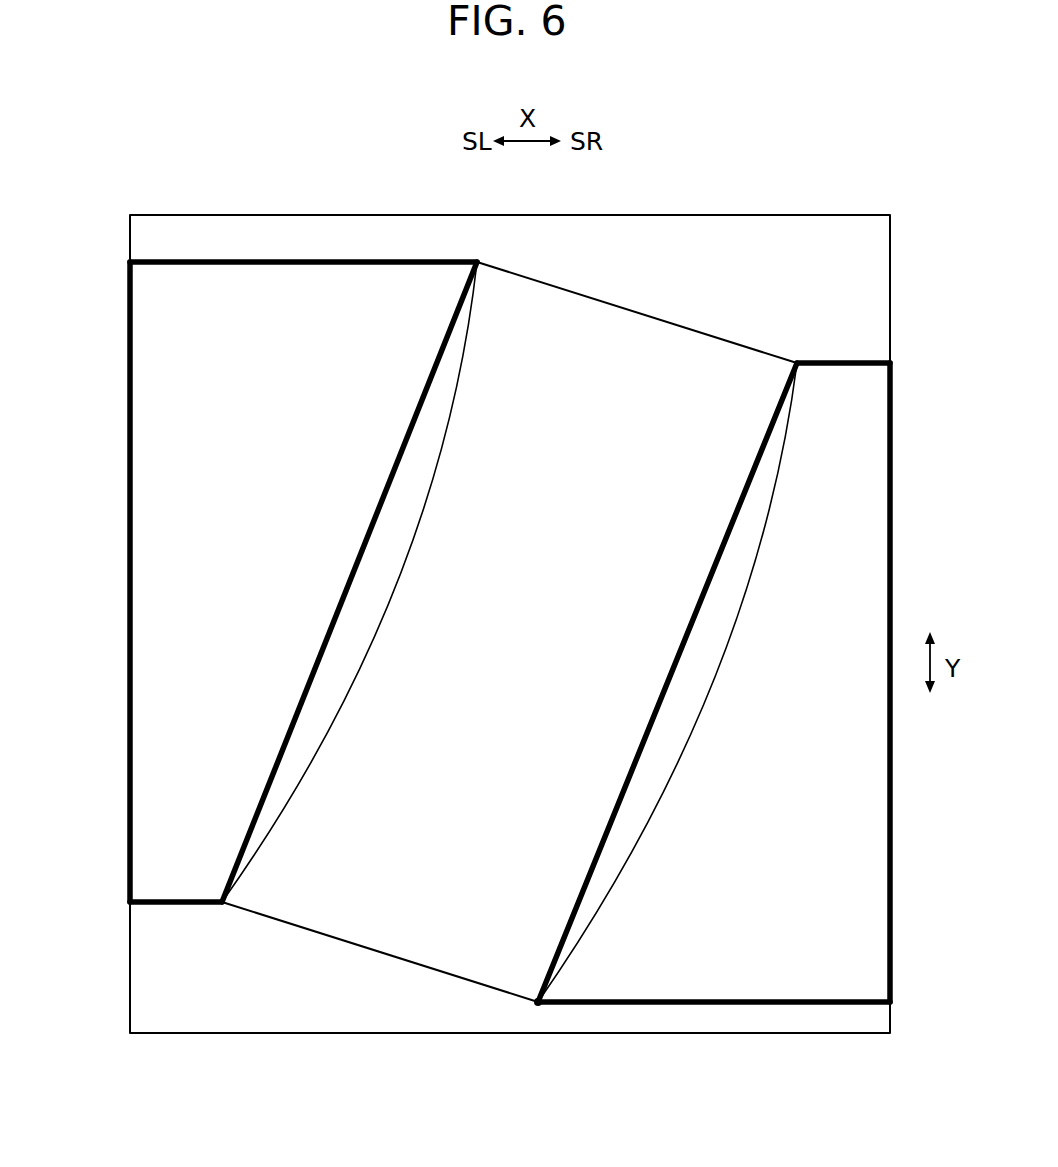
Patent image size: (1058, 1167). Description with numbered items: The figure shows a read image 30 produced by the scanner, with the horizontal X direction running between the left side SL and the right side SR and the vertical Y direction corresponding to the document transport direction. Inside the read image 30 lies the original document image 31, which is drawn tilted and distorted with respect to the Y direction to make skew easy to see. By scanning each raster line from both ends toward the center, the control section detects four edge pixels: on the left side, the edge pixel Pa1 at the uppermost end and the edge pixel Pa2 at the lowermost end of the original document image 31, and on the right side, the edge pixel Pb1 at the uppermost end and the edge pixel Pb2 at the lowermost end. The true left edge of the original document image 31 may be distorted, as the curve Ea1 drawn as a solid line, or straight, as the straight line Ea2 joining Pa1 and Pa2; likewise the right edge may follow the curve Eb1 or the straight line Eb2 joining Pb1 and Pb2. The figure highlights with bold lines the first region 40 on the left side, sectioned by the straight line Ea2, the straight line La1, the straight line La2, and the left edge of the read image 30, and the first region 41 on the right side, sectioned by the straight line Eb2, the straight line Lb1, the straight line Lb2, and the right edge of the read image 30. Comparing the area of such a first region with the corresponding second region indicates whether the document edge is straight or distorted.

The read image 30 is at (833, 216).
The original document image 31 is at (688, 330).
The first region on the side SL 40 is at (299, 577).
The first region on the side SR 41 is at (738, 700).
The straight line La1 is at (311, 264).
The straight line La2 is at (165, 904).
The straight line Lb1 is at (843, 362).
The straight line Lb2 is at (737, 1007).
The edge pixel Pa1 is at (478, 261).
The edge pixel Pa2 is at (221, 905).
The edge pixel Pb1 is at (797, 361).
The edge pixel Pb2 is at (539, 1005).
The curve Ea1 is at (406, 548).
The straight line Ea2 is at (424, 396).
The curve Eb1 is at (658, 800).
The straight line Eb2 is at (673, 675).